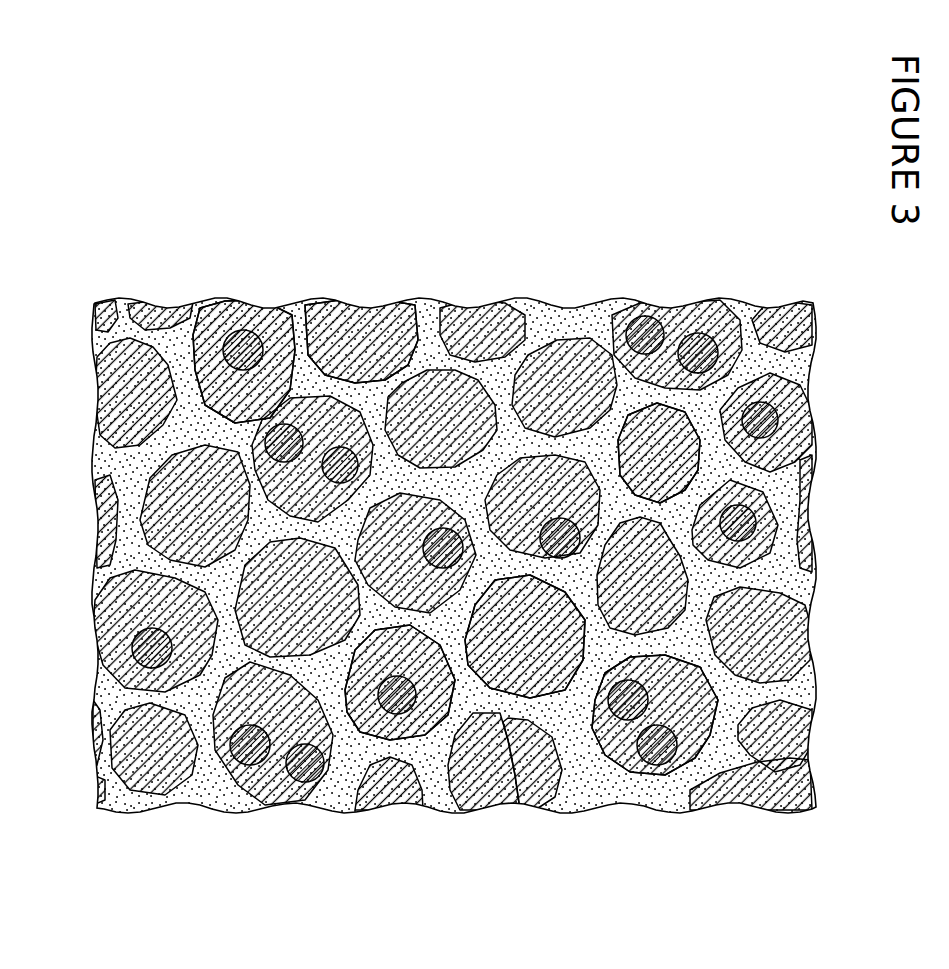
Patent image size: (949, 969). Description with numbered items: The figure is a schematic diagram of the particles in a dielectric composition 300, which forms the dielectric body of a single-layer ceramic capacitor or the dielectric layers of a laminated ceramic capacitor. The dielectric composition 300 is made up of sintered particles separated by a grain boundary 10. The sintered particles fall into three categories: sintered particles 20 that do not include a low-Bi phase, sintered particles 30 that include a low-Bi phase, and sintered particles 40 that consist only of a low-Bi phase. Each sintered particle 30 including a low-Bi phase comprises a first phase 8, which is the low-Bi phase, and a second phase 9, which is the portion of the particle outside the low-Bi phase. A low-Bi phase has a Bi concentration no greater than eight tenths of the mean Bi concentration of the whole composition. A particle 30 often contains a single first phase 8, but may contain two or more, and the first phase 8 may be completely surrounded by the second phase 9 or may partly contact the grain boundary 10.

The dielectric composition 300 is at (553, 300).
The grain boundary 10 is at (428, 340).
The sintered particles not including a low-Bi phase 20 is at (490, 372).
The sintered particles including a low-Bi phase 30 is at (363, 380).
The first phase 8 is at (255, 332).
The second phase 9 is at (203, 326).
The sintered particles comprising only a low-Bi phase 40 is at (705, 468).